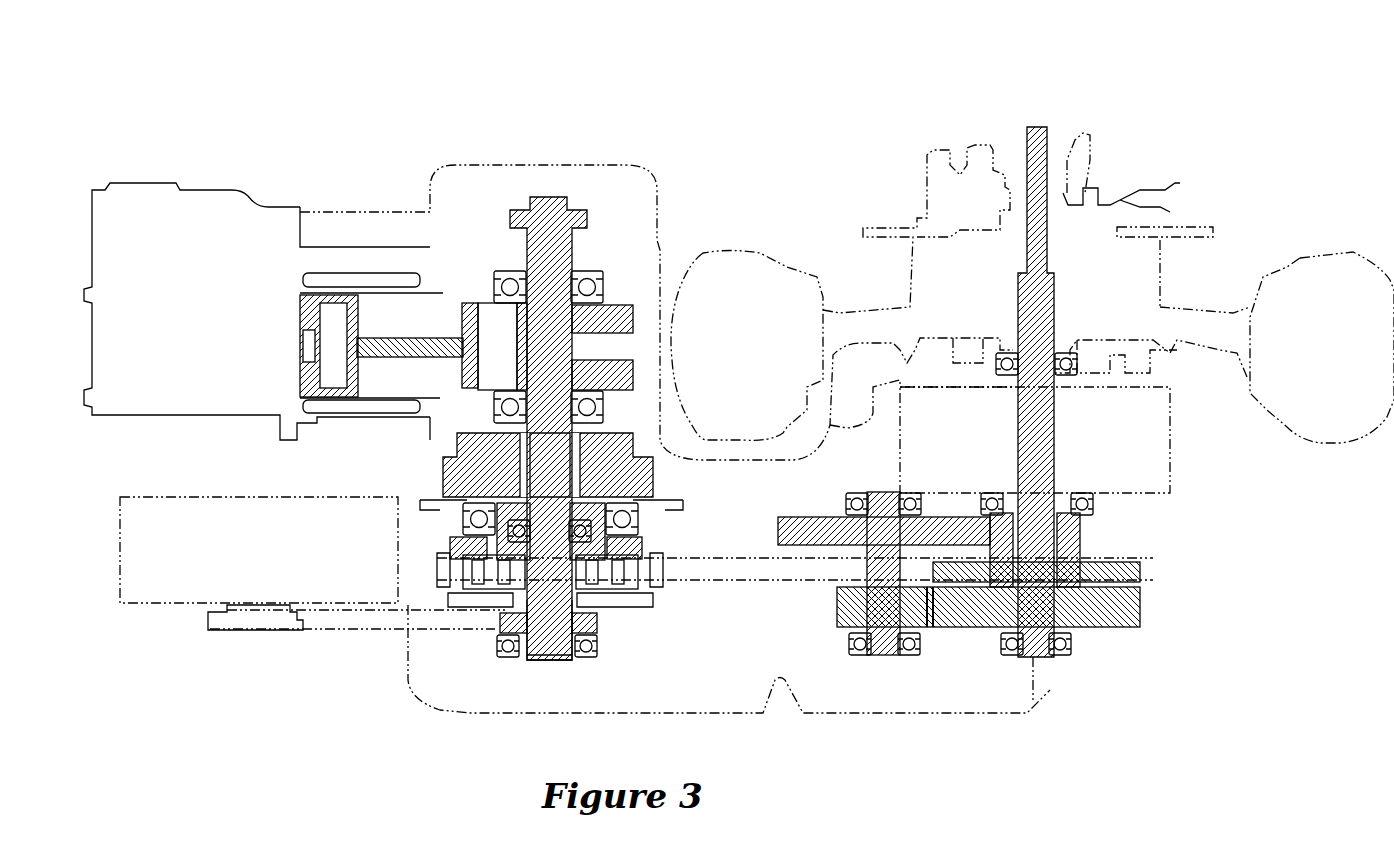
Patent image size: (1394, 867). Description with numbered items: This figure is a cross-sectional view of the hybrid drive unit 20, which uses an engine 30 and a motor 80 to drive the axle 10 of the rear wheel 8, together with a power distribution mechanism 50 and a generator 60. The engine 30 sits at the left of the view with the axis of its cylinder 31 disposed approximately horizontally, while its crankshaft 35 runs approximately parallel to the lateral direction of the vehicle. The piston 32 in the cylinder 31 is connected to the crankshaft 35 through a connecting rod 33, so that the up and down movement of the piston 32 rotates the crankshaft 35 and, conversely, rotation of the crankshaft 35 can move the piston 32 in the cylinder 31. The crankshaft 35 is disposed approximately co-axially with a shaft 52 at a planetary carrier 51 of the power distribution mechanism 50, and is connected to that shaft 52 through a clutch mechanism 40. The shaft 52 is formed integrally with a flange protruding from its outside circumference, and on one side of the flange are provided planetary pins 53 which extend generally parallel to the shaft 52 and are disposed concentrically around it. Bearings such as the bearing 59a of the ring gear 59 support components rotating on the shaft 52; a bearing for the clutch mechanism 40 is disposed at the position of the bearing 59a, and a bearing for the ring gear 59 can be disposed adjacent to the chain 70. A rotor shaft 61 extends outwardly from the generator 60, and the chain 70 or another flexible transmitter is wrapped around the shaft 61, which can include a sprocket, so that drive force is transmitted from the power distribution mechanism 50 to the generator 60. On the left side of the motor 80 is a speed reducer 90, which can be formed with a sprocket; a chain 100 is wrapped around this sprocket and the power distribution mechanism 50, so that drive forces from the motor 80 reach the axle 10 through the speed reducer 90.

The rear wheel 8 is at (1302, 257).
The axle 10 is at (1050, 153).
The drive unit 20 is at (672, 132).
The engine 30 is at (315, 201).
The cylinder 31 is at (448, 292).
The piston 32 is at (317, 295).
The connecting rod 33 is at (422, 346).
The crankshaft 35 is at (543, 200).
The clutch mechanism 40 is at (441, 460).
The power distribution mechanism 50 is at (588, 674).
The planetary carrier 51 is at (554, 664).
The shaft 52 is at (553, 655).
The planetary pins 53 is at (493, 588).
The ring gear 59 is at (452, 540).
The bearing 59a is at (622, 518).
The generator 60 is at (150, 603).
The rotor shaft 61 is at (258, 620).
The chain 70 is at (365, 632).
The motor 80 is at (1135, 462).
The speed reducer 90 is at (1067, 658).
The chain 100 is at (793, 582).